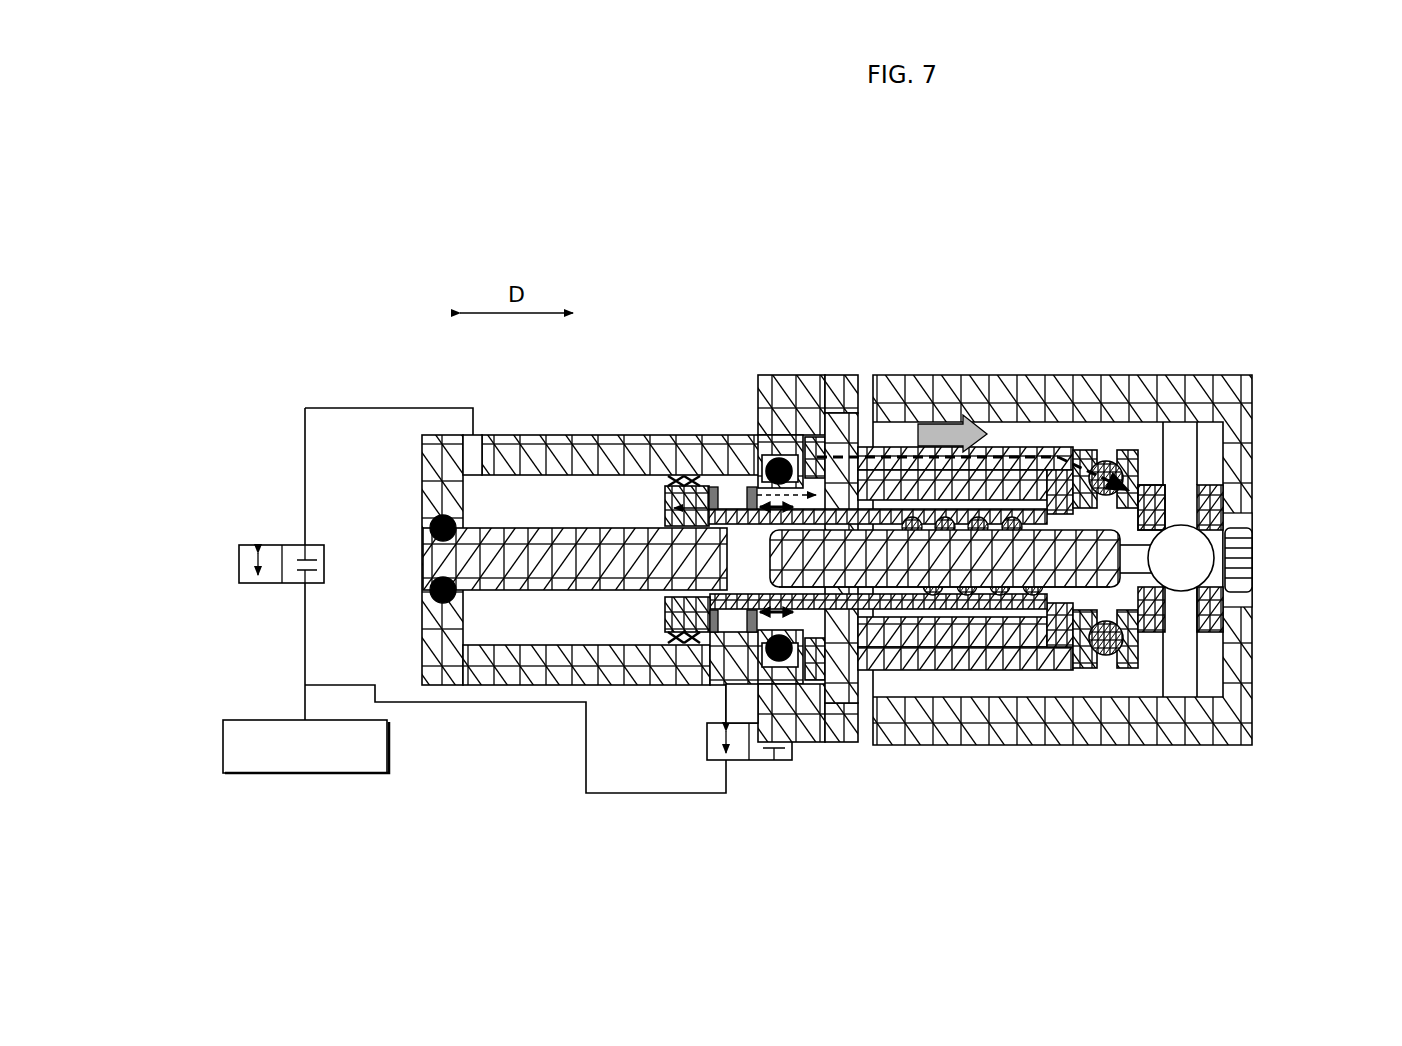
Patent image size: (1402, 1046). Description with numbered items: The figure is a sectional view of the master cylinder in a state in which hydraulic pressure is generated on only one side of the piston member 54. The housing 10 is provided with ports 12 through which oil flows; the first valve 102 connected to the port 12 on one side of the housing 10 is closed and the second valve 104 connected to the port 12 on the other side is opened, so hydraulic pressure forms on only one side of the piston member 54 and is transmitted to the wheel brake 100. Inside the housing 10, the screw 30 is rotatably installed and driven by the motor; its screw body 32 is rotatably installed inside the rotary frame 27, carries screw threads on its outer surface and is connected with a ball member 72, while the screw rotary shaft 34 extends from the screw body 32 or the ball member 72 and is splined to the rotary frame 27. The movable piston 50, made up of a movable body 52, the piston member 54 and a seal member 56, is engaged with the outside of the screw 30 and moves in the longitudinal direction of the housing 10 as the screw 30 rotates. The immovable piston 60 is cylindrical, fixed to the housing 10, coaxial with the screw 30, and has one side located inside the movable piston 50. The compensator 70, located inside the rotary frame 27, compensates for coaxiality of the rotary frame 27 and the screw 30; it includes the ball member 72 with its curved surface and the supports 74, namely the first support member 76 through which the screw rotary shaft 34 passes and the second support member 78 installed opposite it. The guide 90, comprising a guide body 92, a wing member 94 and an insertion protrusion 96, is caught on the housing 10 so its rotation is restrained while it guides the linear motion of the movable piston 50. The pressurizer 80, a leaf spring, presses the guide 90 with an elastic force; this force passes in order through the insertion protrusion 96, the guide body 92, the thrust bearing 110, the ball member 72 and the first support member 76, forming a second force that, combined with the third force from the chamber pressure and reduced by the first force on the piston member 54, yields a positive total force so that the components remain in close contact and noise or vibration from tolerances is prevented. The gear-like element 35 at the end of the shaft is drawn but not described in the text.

The housing 10 is at (880, 571).
The port 12 is at (472, 450).
The rotary frame 27 is at (1010, 717).
The screw 30 is at (755, 574).
The screw body 32 is at (866, 562).
The screw rotary shaft 34 is at (1228, 520).
The gear 35 is at (1240, 563).
The movable piston 50 is at (564, 522).
The movable body 52 is at (910, 512).
The piston member 54 is at (660, 486).
The seal member 56 is at (713, 487).
The immovable piston 60 is at (551, 572).
The compensator 70 is at (1161, 656).
The ball member 72 is at (1182, 592).
The supports 74 is at (1265, 503).
The first support member 76 is at (1210, 503).
The second support member 78 is at (1142, 486).
The pressurizer 80 is at (800, 447).
The guide 90 is at (1043, 433).
The guide body 92 is at (990, 485).
The wing member 94 is at (1080, 465).
The insertion protrusion 96 is at (832, 440).
The wheel brake 100 is at (223, 748).
The first valve 102 is at (239, 563).
The second valve 104 is at (770, 762).
The thrust bearing 110 is at (1153, 502).